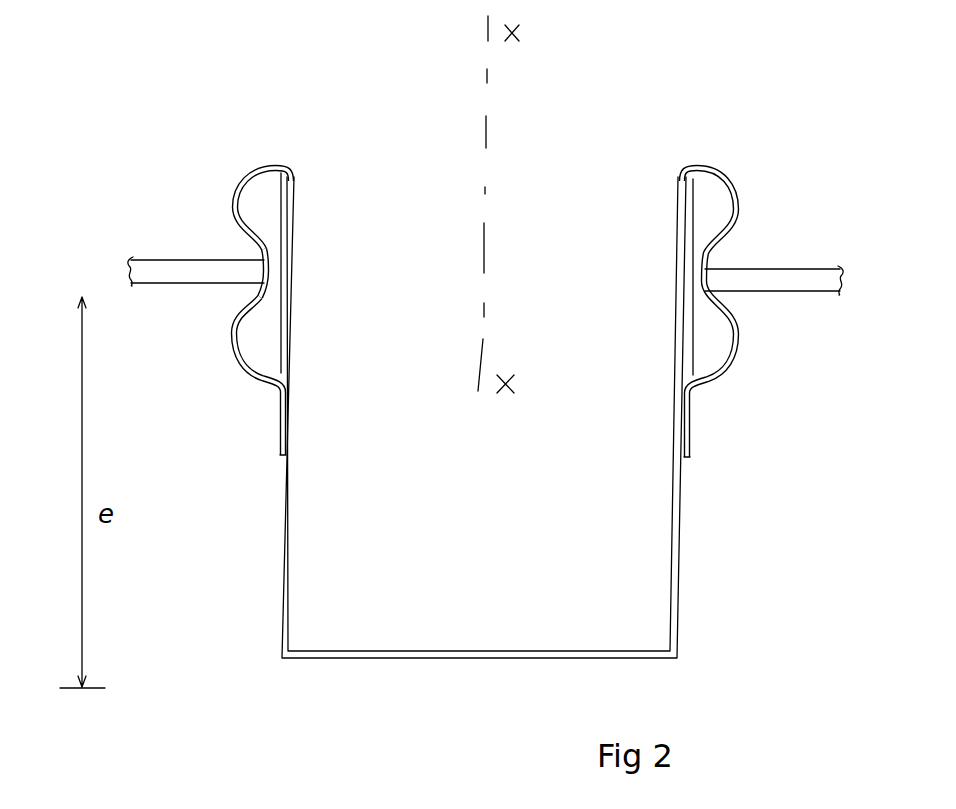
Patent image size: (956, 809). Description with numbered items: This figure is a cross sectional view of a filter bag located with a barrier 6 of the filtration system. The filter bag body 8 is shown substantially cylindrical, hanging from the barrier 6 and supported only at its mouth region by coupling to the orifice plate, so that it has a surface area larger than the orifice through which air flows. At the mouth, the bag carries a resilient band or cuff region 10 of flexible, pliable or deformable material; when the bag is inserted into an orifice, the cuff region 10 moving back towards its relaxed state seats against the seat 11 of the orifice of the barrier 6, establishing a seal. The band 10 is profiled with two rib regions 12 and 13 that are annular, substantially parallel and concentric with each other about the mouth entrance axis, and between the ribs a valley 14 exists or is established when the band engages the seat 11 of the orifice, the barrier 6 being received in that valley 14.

The barrier 6 is at (794, 284).
The filter bag body 8 is at (675, 542).
The band or cuff region 10 is at (750, 221).
The seat 11 is at (712, 291).
The rib region 12 is at (233, 357).
The rib region 13 is at (237, 200).
The valley 14 is at (273, 268).